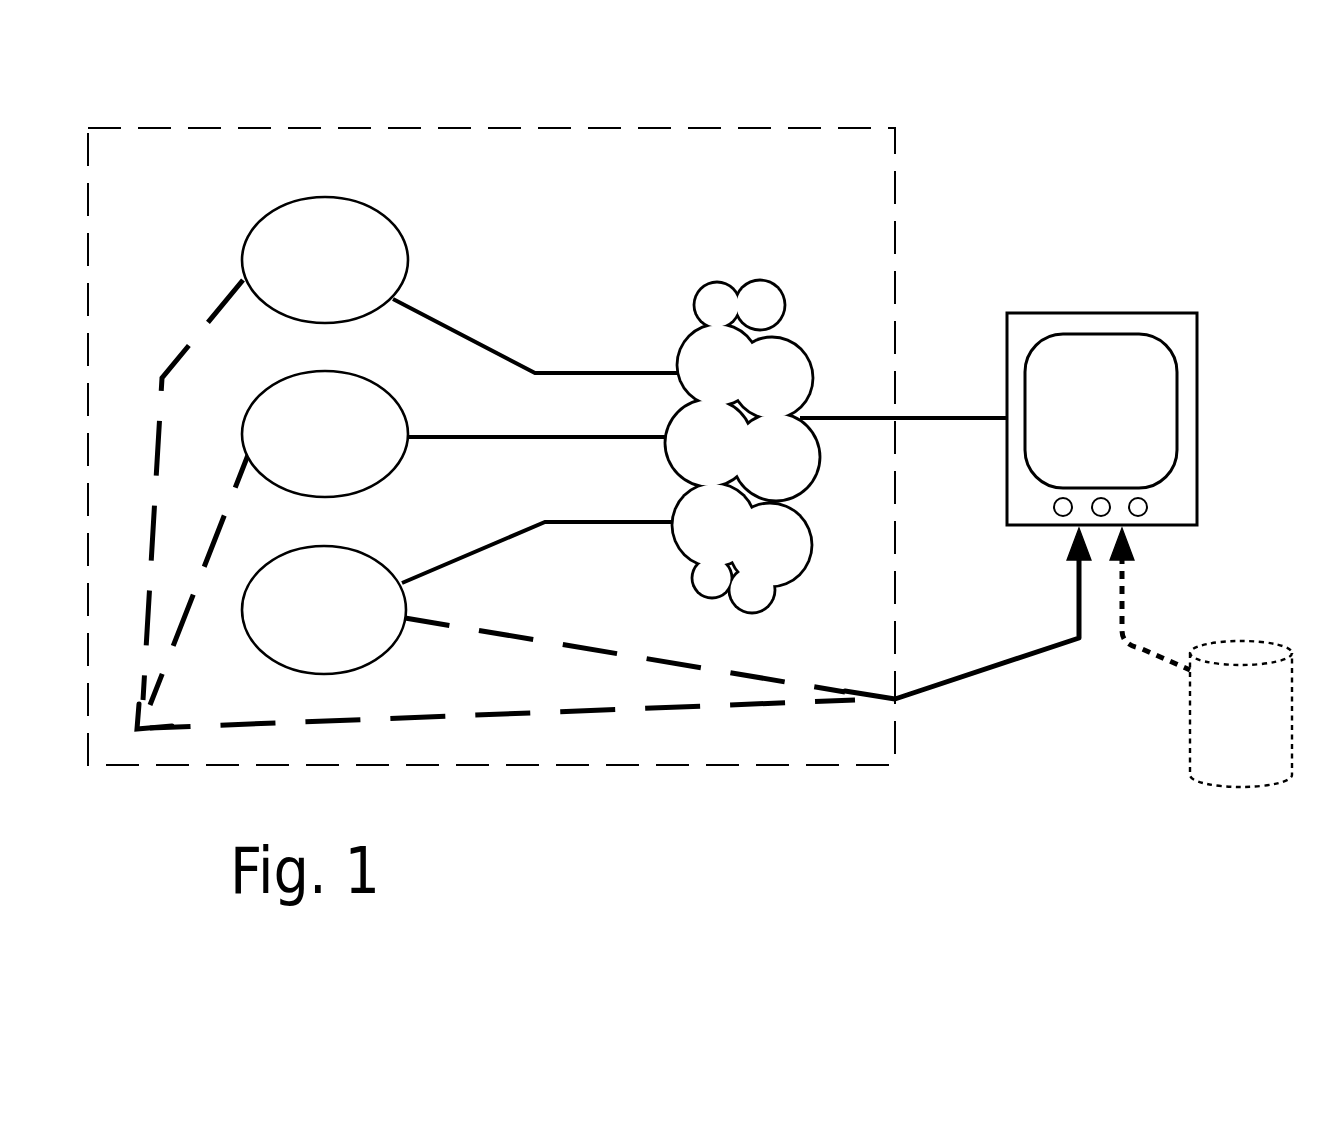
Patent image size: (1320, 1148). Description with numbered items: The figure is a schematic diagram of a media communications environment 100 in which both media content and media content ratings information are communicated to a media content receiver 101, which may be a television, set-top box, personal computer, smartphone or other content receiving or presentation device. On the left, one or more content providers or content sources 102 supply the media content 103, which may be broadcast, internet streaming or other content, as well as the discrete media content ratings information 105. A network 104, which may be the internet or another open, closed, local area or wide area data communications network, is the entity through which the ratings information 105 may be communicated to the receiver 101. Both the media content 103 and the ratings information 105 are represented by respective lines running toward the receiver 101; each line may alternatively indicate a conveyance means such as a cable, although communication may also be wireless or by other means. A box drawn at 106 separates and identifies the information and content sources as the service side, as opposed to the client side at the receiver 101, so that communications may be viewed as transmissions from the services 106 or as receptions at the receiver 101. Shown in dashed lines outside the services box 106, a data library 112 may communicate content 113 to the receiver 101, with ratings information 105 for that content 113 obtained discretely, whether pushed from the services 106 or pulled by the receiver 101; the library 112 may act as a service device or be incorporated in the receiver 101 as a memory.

The media communications environment 100 is at (1155, 130).
The media content receiver 101 is at (1057, 311).
The content sources 102 is at (380, 207).
The media content 103 is at (983, 673).
The network 104 is at (718, 282).
The media content ratings information 105 is at (927, 423).
The services box 106 is at (893, 237).
The data library 112 is at (1190, 760).
The content 113 is at (1142, 647).